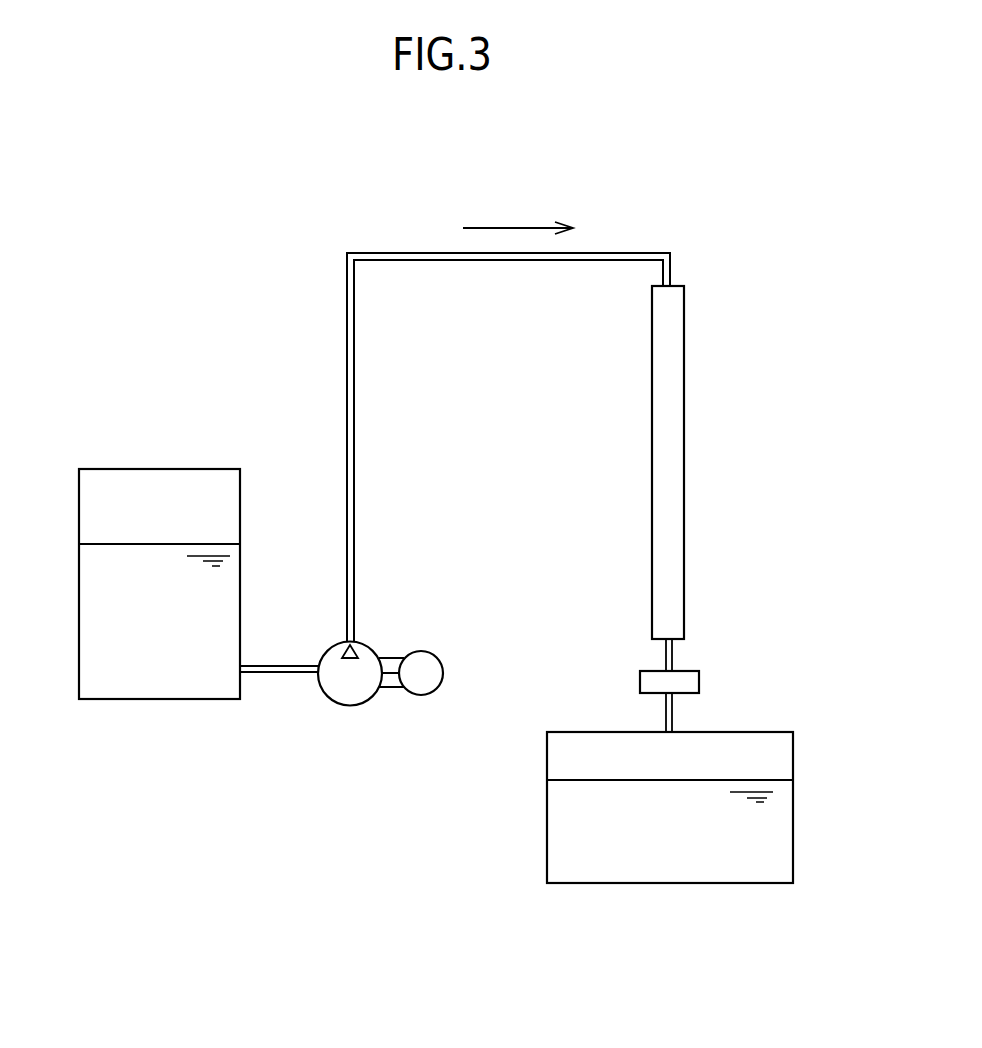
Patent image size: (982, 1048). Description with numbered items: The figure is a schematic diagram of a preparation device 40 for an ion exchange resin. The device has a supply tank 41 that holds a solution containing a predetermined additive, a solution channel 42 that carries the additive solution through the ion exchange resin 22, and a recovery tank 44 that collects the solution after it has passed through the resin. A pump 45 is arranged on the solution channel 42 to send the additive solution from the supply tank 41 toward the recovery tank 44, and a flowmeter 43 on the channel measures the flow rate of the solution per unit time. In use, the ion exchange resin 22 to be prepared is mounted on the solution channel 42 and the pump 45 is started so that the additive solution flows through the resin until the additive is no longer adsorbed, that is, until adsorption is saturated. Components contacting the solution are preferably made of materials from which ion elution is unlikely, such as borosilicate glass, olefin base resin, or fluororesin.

The preparation device 40 is at (657, 203).
The supply tank 41 is at (160, 469).
The solution channel 42 is at (354, 391).
The ion exchange resin 22 is at (652, 417).
The flowmeter 43 is at (640, 682).
The recovery tank 44 is at (547, 757).
The pump 45 is at (388, 657).